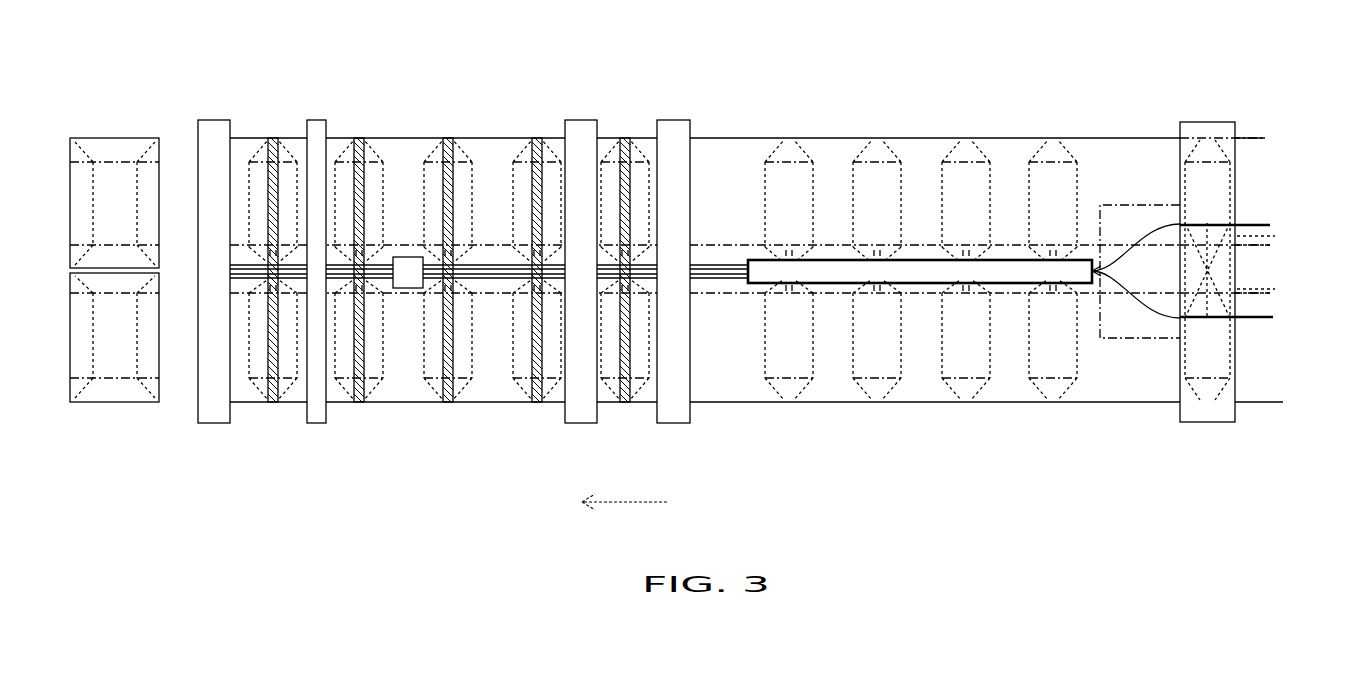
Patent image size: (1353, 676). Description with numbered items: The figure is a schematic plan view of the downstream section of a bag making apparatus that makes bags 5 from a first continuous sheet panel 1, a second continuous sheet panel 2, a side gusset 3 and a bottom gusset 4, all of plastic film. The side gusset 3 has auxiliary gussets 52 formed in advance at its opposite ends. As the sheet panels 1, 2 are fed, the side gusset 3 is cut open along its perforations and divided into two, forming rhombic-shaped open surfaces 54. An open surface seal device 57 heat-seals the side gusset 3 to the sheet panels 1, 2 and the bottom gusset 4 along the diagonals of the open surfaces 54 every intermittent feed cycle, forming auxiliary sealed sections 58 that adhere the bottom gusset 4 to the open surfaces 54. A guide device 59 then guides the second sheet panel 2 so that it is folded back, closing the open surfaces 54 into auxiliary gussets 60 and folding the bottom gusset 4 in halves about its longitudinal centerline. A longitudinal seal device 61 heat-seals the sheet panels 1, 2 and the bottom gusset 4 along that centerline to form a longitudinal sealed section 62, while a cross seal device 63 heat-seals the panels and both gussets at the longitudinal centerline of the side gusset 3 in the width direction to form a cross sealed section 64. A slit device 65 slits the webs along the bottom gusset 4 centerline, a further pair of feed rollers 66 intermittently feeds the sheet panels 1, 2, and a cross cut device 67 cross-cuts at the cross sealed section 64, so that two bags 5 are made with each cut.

The first continuous sheet panel 1 is at (838, 378).
The second continuous sheet panel 2 is at (835, 163).
The side gusset 3 is at (1028, 195).
The bottom gusset 4 is at (1007, 303).
The bag 5 is at (120, 155).
The auxiliary gusset 52 is at (787, 147).
The open surface 54 is at (1272, 228).
The open surface seal device 57 is at (1207, 122).
The auxiliary sealed section 58 is at (1275, 236).
The guide device 59 is at (1123, 205).
The auxiliary gusset 60 is at (1068, 260).
The longitudinal seal device 61 is at (920, 260).
The longitudinal sealed section 62 is at (715, 258).
The cross seal device 63 is at (670, 127).
The cross sealed section 64 is at (532, 183).
The slit device 65 is at (402, 257).
The feed rollers 66 is at (316, 423).
The cross cut device 67 is at (214, 120).